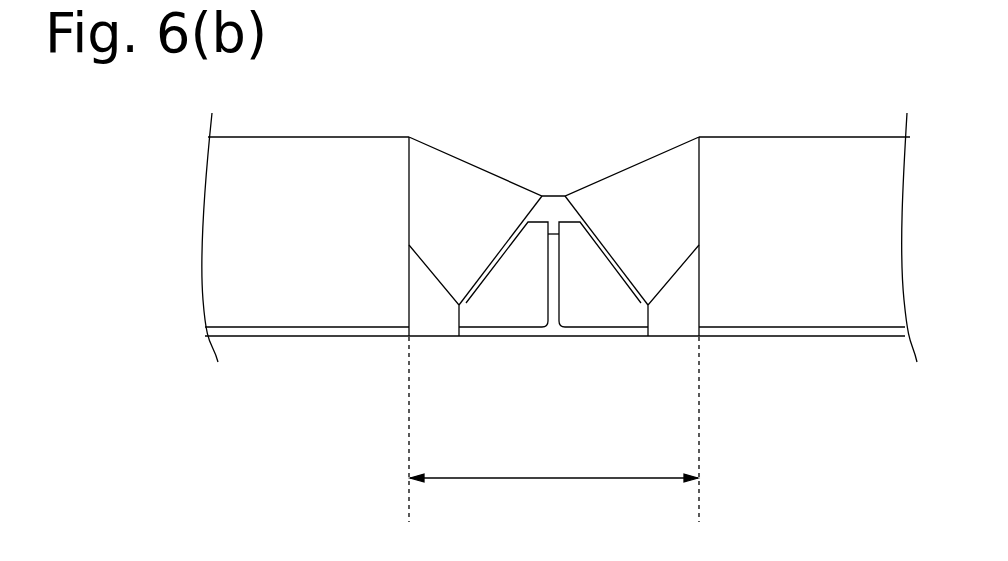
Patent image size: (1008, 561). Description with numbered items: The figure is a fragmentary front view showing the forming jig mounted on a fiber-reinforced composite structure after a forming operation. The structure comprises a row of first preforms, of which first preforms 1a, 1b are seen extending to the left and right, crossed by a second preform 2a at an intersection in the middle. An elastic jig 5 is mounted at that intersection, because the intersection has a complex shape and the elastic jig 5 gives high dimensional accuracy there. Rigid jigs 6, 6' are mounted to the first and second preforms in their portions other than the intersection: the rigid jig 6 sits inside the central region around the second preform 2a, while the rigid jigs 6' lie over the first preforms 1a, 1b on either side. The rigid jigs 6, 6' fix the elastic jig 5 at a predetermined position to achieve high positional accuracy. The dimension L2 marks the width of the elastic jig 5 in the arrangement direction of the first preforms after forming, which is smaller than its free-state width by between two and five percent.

The first preform 1a is at (308, 330).
The first preform 1b is at (797, 333).
The second preform 2a is at (592, 332).
The elastic jig 5 is at (543, 162).
The rigid jig 6 is at (535, 329).
The rigid jig 6' is at (553, 134).
The width of the elastic jig after a forming operation L2 is at (554, 433).